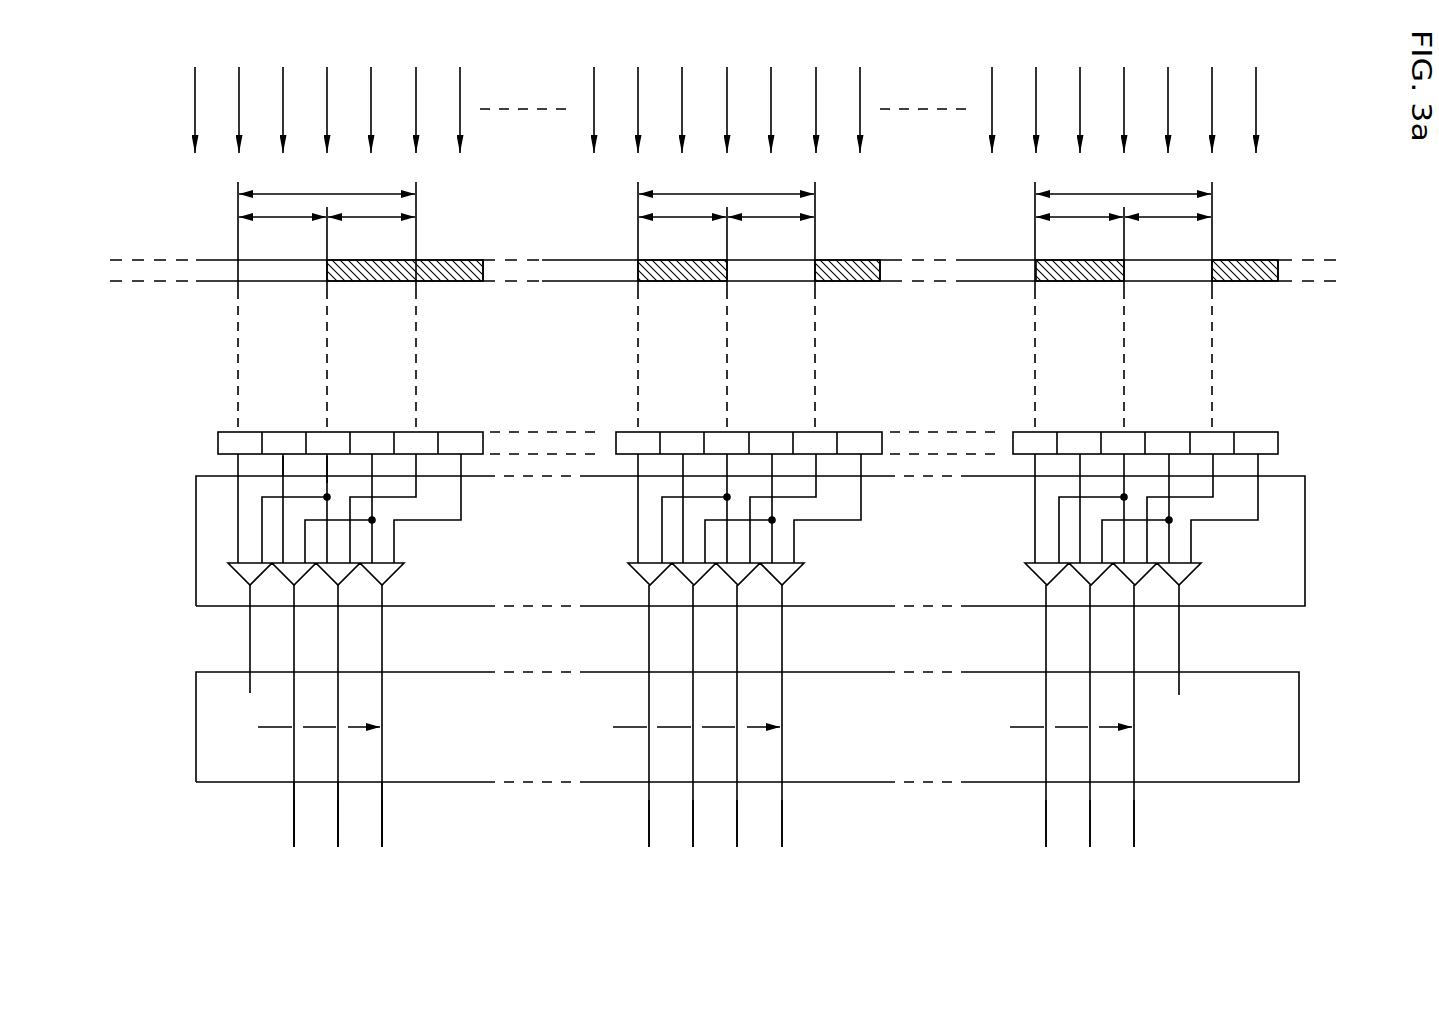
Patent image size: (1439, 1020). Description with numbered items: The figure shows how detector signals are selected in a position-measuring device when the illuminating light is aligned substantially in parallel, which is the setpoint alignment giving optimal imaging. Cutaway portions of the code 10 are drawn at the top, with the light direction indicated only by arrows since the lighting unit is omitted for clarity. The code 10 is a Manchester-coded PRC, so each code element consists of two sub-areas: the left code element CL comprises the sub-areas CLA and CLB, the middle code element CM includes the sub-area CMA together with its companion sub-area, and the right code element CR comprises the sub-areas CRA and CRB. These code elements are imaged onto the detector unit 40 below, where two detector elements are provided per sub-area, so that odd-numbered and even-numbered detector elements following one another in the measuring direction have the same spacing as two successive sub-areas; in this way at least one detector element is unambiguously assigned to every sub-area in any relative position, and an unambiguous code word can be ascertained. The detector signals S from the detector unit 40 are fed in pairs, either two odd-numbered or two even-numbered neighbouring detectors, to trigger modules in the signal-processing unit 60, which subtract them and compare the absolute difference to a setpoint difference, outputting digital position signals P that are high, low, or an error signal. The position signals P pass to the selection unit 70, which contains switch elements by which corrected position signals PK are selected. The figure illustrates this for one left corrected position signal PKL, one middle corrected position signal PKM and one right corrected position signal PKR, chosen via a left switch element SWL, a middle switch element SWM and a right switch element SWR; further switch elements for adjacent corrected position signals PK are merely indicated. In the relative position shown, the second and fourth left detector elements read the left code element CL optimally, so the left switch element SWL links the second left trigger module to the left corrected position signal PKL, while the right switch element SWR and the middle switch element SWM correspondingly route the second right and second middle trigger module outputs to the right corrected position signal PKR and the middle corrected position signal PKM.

The code 10 is at (203, 261).
The detector unit 40 is at (233, 432).
The signal-processing unit 60 is at (196, 558).
The selection unit 70 is at (196, 763).
The detector signals S is at (327, 483).
The position signals P is at (338, 655).
The corrected position signals PK is at (382, 833).
The left code element CL is at (327, 184).
The sub-area of left code element CLA is at (282, 207).
The sub-area of left code element CLB is at (371, 207).
The middle code element CM is at (726, 184).
The sub-area of middle code element CMA is at (682, 207).
The right code element CR is at (1123, 184).
The sub-area of right code element CRA is at (1079, 207).
The sub-area of right code element CRB is at (1168, 207).
The left switch element SWL is at (317, 714).
The middle switch element SWM is at (696, 714).
The right switch element SWR is at (1071, 714).
The left corrected position signal PKL is at (329, 837).
The middle corrected position signal PKM is at (715, 837).
The right corrected position signal PKR is at (1090, 837).